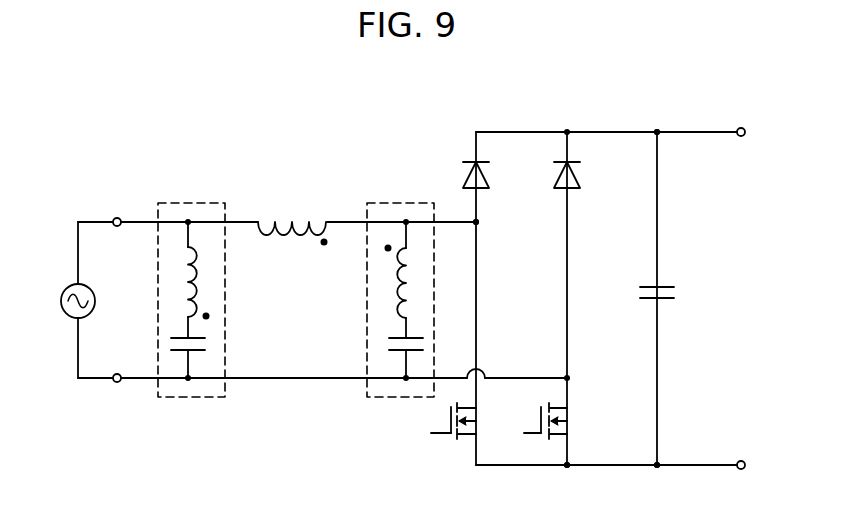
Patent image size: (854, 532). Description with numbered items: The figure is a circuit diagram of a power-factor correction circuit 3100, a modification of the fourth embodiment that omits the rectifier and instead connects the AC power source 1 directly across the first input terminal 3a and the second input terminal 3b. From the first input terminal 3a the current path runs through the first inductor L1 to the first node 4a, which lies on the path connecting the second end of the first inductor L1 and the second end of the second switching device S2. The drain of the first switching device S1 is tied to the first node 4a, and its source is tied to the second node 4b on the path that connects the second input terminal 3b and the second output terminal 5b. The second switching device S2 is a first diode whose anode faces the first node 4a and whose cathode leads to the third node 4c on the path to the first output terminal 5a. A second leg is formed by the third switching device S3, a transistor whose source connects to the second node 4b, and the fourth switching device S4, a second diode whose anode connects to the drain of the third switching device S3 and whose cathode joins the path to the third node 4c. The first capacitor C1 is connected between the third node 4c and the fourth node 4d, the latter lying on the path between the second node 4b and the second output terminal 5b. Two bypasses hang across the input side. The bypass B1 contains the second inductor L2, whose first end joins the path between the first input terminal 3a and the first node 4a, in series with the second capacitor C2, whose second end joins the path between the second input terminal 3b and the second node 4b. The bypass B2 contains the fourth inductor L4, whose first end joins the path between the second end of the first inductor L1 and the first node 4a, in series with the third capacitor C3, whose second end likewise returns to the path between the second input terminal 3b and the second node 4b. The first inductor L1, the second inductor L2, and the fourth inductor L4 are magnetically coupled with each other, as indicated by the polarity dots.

The power-factor correction circuit 3100 is at (393, 109).
The AC power source 1 is at (64, 287).
The first input terminal 3a is at (114, 220).
The second input terminal 3b is at (114, 381).
The bypass B1 is at (193, 202).
The bypass B2 is at (408, 202).
The first inductor L1 is at (293, 217).
The second inductor L2 is at (204, 283).
The fourth inductor L4 is at (390, 282).
The first capacitor C1 is at (674, 288).
The second capacitor C2 is at (204, 342).
The third capacitor C3 is at (390, 343).
The first switching device S1 is at (470, 418).
The second switching device S2 is at (491, 170).
The third switching device S3 is at (562, 418).
The fourth switching device S4 is at (582, 170).
The first node 4a is at (479, 223).
The second node 4b is at (568, 467).
The third node 4c is at (658, 130).
The fourth node 4d is at (658, 467).
The first output terminal 5a is at (758, 130).
The second output terminal 5b is at (757, 465).